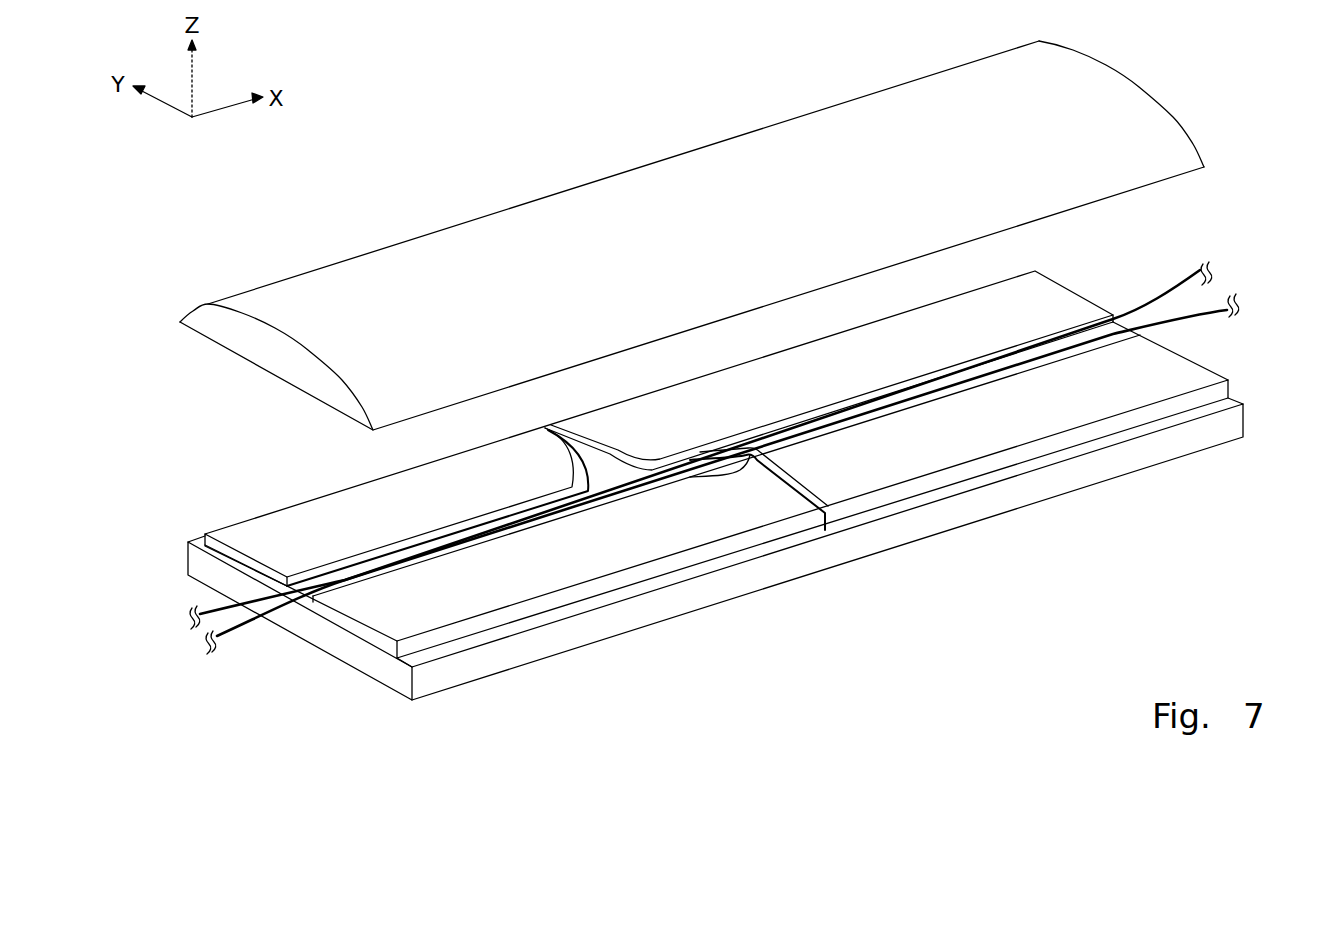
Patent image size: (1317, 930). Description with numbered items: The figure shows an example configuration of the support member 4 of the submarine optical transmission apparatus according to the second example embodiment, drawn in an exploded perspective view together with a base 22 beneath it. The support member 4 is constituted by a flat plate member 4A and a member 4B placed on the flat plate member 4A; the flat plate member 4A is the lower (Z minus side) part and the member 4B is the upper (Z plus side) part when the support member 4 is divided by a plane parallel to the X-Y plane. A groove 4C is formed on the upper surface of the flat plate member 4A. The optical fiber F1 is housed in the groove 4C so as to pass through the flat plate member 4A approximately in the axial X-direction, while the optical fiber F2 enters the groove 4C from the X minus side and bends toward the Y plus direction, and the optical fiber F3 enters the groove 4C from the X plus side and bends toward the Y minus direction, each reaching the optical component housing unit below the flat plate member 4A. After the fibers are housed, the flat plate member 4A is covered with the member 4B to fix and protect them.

The support member 4 is at (141, 378).
The flat plate member 4A is at (228, 538).
The member 4B is at (221, 331).
The groove 4C is at (607, 487).
The base 22 is at (1211, 437).
The optical fiber F1 is at (235, 632).
The optical fiber F2 is at (196, 606).
The optical fiber F3 is at (1225, 314).